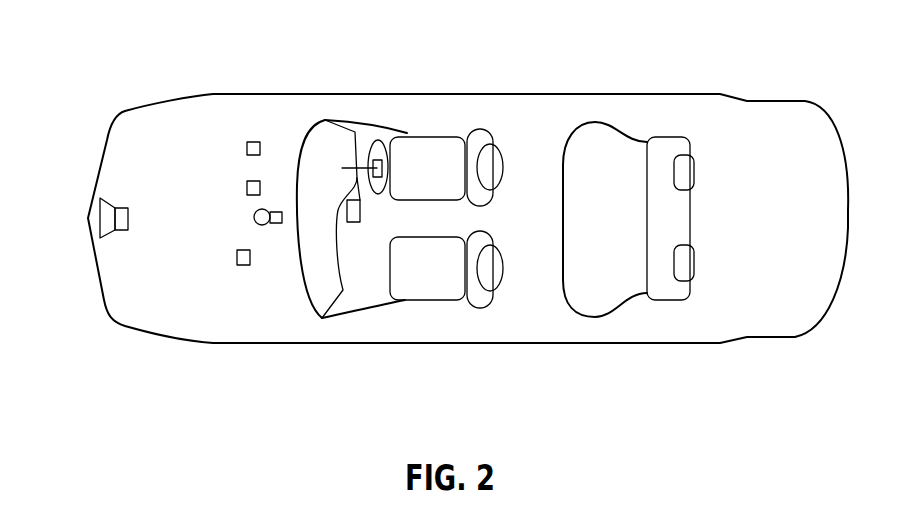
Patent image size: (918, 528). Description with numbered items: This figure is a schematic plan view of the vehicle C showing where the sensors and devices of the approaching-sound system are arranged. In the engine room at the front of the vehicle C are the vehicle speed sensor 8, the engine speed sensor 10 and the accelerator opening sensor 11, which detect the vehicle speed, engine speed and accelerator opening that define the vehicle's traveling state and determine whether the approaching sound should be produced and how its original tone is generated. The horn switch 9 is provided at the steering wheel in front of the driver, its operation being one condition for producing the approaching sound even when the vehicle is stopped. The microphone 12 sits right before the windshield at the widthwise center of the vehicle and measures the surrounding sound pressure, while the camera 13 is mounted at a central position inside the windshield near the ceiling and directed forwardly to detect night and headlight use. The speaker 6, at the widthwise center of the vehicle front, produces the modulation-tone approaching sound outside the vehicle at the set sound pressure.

The vehicle C is at (687, 88).
The speaker 6 is at (92, 227).
The vehicle speed sensor 8 is at (257, 142).
The horn switch 9 is at (375, 158).
The engine speed sensor 10 is at (247, 188).
The accelerator opening sensor 11 is at (243, 265).
The microphone 12 is at (273, 224).
The camera 13 is at (355, 167).